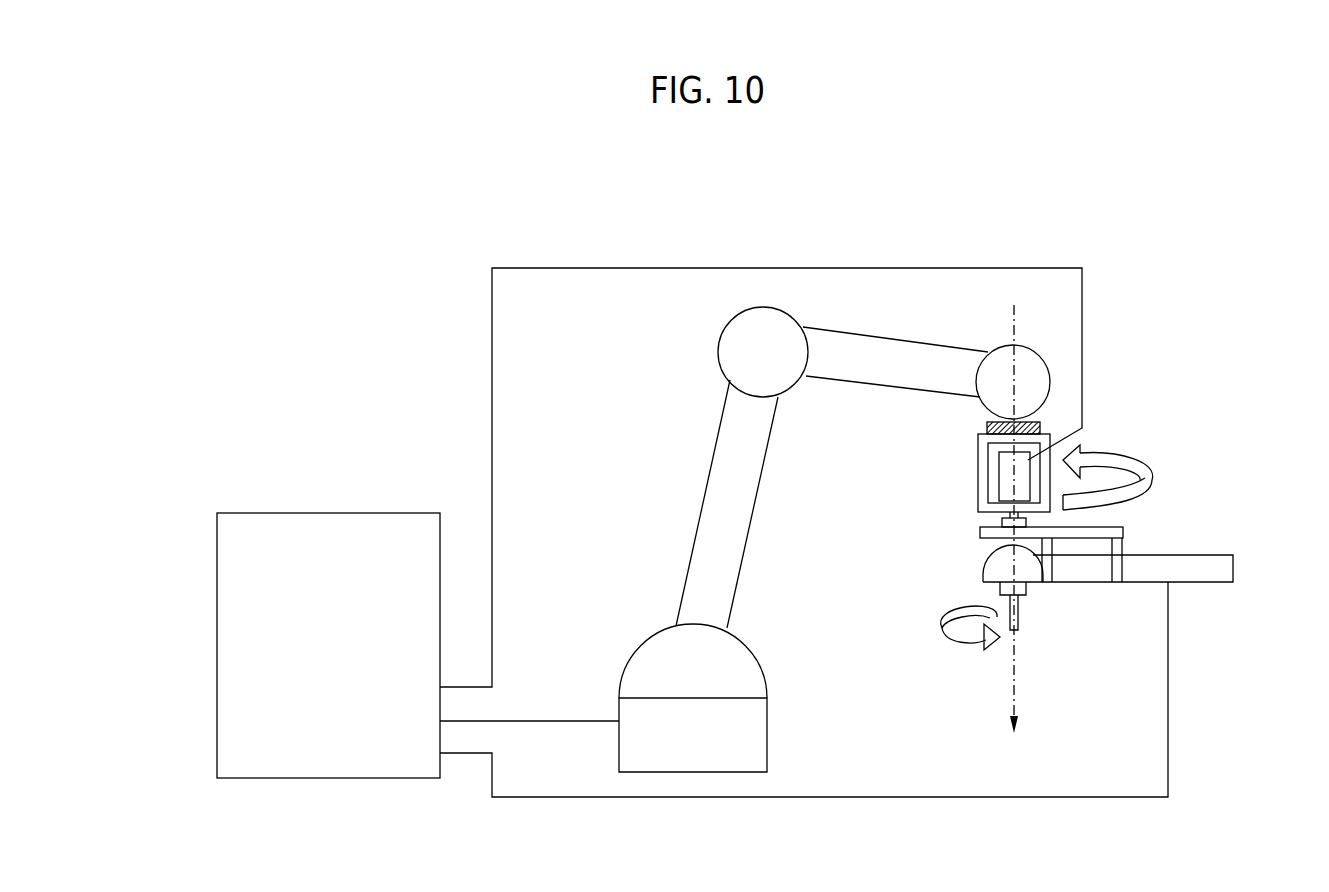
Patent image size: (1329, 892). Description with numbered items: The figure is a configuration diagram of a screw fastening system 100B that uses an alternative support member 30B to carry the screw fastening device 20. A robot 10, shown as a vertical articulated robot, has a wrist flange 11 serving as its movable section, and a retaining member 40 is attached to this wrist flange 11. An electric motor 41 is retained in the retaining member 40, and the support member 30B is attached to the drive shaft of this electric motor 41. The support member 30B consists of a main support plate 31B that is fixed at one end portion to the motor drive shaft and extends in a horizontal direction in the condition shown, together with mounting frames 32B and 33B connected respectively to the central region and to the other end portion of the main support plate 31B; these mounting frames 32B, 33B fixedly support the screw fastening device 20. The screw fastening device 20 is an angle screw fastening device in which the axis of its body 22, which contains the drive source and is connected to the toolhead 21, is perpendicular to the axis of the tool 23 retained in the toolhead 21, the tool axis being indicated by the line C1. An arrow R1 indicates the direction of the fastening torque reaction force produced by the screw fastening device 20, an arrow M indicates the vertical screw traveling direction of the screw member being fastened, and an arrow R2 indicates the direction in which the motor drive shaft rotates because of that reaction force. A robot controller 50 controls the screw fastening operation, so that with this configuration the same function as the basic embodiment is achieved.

The screw fastening system 100B is at (937, 183).
The robot 10 is at (843, 527).
The wrist flange 11 is at (1047, 428).
The retaining member 40 is at (974, 462).
The electric motor 41 is at (999, 485).
The screw fastening device 20 is at (1102, 583).
The toolhead 21 is at (983, 566).
The body 22 is at (1200, 583).
The tool 23 is at (1020, 622).
The support member 30B is at (1097, 549).
The main support plate 31B is at (1098, 527).
The mounting frame 32B is at (1053, 548).
The mounting frame 33B is at (1122, 548).
The robot controller 50 is at (392, 513).
The rotation axis C1 is at (1014, 504).
The arrow indicating fastening torque reaction force direction R1 is at (954, 640).
The arrow indicating drive shaft rotation direction R2 is at (1135, 478).
The arrow indicating screw traveling direction M is at (1016, 700).